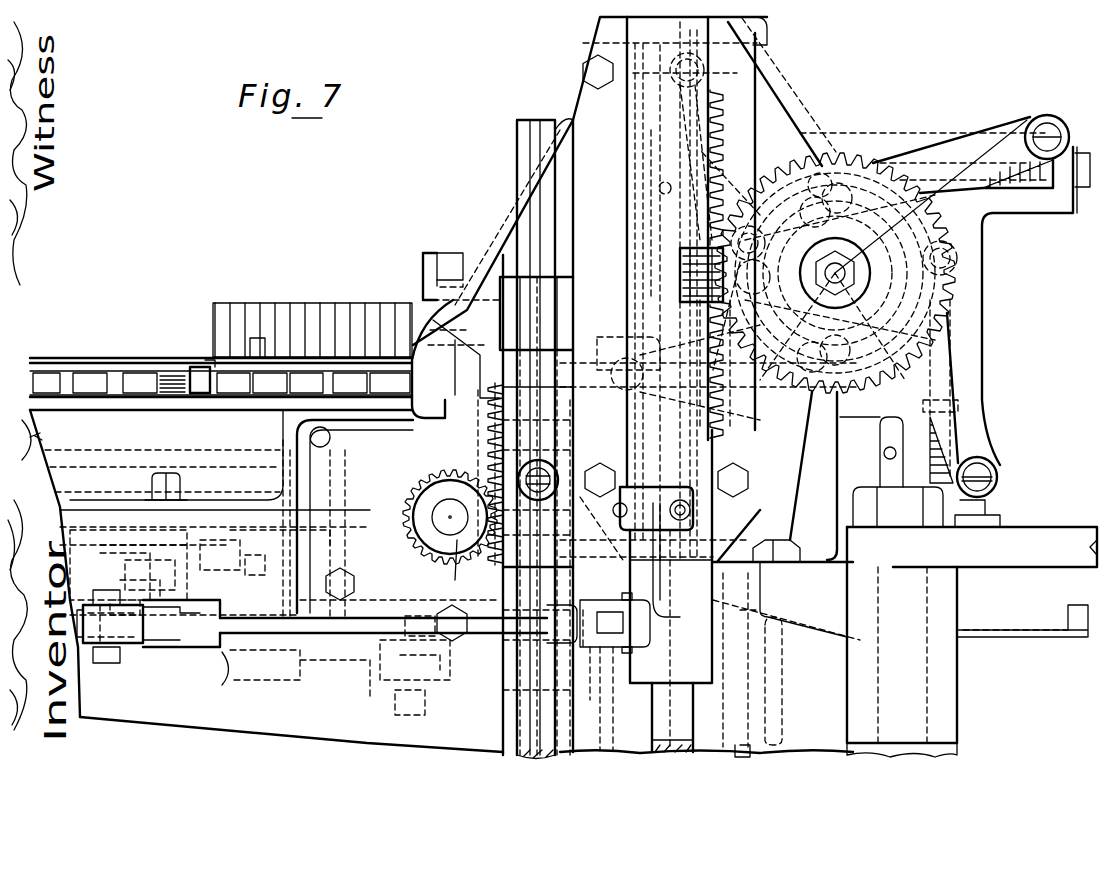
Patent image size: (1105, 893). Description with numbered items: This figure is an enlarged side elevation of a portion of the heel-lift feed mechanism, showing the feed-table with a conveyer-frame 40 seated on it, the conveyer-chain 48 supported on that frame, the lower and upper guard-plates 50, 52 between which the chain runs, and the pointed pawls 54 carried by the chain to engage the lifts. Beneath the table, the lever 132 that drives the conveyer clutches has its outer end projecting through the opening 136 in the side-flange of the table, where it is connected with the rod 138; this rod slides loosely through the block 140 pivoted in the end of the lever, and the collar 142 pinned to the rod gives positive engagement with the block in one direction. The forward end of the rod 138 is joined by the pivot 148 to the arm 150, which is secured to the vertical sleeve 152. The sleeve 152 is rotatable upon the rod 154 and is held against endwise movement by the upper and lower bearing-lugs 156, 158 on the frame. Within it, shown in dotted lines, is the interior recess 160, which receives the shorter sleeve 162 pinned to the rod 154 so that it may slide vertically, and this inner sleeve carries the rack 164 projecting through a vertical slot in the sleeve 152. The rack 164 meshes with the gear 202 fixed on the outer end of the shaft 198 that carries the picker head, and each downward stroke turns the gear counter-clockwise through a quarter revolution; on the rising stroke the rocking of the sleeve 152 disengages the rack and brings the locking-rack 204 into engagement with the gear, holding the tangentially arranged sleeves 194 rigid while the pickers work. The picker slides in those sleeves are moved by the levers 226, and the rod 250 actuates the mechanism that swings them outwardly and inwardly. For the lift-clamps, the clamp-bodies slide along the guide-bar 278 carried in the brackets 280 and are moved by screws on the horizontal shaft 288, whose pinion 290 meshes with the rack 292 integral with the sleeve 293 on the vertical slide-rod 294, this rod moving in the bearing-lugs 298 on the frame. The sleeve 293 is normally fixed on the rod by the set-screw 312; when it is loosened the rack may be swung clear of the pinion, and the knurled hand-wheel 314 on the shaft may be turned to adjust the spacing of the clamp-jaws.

The conveyer-frame 40 is at (21, 437).
The conveyer-chain 48 is at (157, 355).
The lower guard-plate 50 is at (157, 403).
The upper guard-plate 52 is at (115, 358).
The pointed pawl 54 is at (205, 367).
The lever 132 is at (150, 592).
The opening 136 is at (209, 676).
The rod 138 is at (252, 636).
The block 140 is at (112, 660).
The collar 142 is at (153, 635).
The pivot 148 is at (627, 657).
The arm 150 is at (655, 580).
The vertical sleeve 152 is at (616, 112).
The rod 154 is at (685, 735).
The upper bearing-lug 156 is at (633, 33).
The lower bearing-lug 158 is at (712, 657).
The interior recess 160 is at (823, 443).
The sleeve 162 is at (645, 167).
The rack 164 is at (760, 112).
The sleeve 194 is at (917, 460).
The shaft 198 is at (945, 248).
The gear 202 is at (948, 255).
The locking-rack 204 is at (683, 272).
The lever 226 is at (980, 150).
The rod 250 is at (745, 757).
The guide-bar 278 is at (475, 232).
The bracket 280 is at (430, 283).
The horizontal shaft 288 is at (445, 527).
The pinion 290 is at (408, 497).
The rack 292 is at (510, 440).
The sleeve 293 is at (418, 288).
The vertical slide-rod 294 is at (510, 118).
The bearing-lug 298 is at (512, 222).
The set-screw 312 is at (540, 460).
The knurled hand-wheel 314 is at (444, 570).